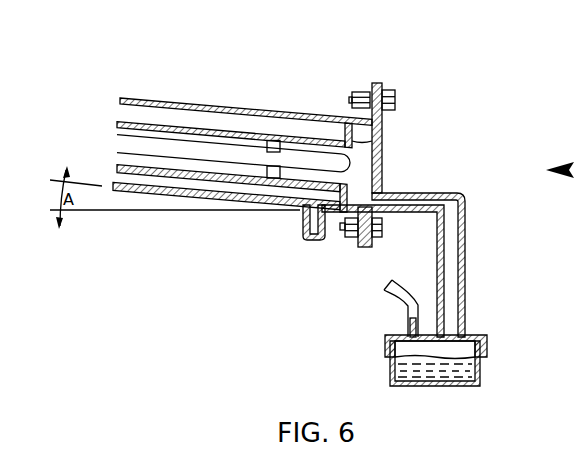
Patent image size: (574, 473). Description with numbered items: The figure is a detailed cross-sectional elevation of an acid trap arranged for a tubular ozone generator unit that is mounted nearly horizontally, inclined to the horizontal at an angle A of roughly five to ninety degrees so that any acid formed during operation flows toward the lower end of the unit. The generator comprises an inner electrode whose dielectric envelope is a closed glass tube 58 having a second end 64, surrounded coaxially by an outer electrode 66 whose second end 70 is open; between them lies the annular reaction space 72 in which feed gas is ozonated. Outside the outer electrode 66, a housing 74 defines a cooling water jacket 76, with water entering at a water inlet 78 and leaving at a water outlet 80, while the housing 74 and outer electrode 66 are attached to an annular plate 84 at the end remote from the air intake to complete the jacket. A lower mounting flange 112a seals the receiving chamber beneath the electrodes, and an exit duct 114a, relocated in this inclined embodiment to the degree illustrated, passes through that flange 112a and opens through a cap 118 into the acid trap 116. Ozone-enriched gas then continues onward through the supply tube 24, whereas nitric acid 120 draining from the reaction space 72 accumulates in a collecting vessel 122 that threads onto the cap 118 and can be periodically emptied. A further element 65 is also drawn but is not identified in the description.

The supply tube 24 is at (409, 303).
The glass tube 58 is at (137, 146).
The second end of tube 64 is at (330, 165).
The fastener insert 65 is at (278, 141).
The outer electrode 66 is at (182, 128).
The second end of outer electrode 70 is at (313, 138).
The reaction space 72 is at (251, 125).
The housing 74 is at (152, 98).
The cooling water jacket 76 is at (130, 112).
The water inlet 78 is at (330, 214).
The water outlet 80 is at (573, 122).
The annular plate 84 is at (383, 138).
The lower mounting flange 112a is at (383, 157).
The exit duct 114a is at (440, 196).
The acid trap 116 is at (512, 364).
The cap 118 is at (478, 336).
The nitric acid 120 is at (405, 372).
The collecting vessel 122 is at (462, 386).